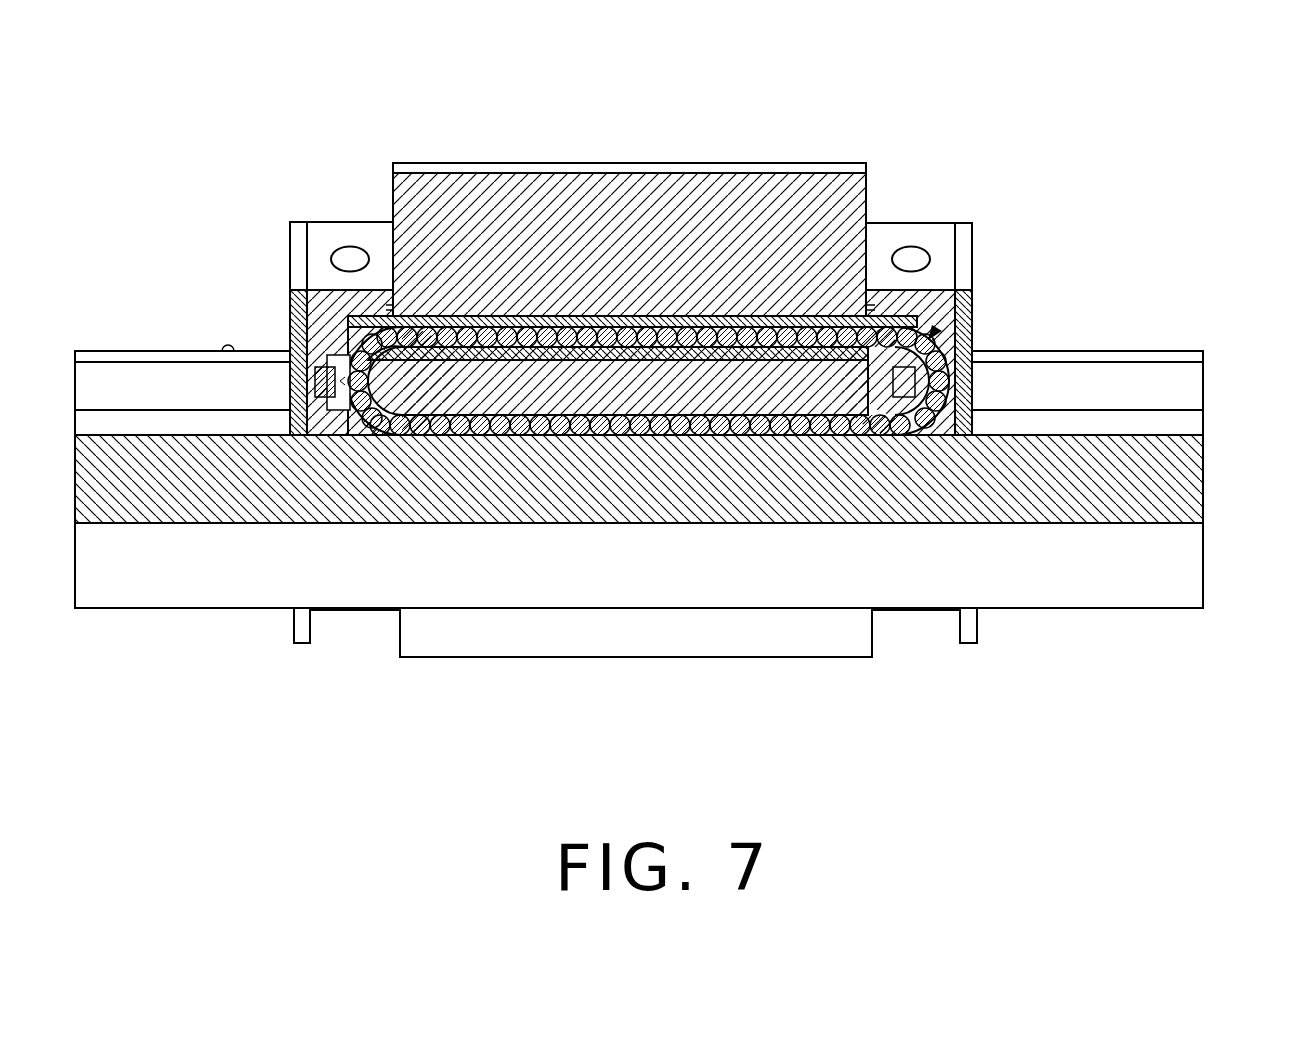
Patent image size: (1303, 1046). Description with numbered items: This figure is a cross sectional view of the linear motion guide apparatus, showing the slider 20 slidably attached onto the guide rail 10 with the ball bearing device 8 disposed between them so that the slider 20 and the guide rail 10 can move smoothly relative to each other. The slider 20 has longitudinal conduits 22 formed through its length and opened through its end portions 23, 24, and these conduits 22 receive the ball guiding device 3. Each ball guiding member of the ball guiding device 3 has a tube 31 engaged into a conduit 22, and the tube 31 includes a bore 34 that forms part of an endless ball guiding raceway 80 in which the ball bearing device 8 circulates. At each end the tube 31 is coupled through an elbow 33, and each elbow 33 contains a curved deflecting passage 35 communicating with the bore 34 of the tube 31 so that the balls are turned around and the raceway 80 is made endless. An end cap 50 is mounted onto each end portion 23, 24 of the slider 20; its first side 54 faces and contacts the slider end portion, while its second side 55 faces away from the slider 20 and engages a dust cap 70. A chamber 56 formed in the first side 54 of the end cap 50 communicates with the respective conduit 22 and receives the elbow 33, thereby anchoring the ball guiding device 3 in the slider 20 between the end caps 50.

The guide rail 10 is at (1178, 373).
The slider 20 is at (658, 203).
The longitudinal conduits 22 is at (563, 323).
The end portion of slider 23 is at (390, 192).
The end portion of slider 24 is at (867, 180).
The ball guiding device 3 is at (972, 290).
The tube 31 is at (715, 317).
The elbow 33 is at (343, 332).
The bore 34 is at (807, 333).
The deflecting passage 35 is at (948, 382).
The end cap 50 is at (332, 228).
The first side of end cap 54 is at (405, 242).
The second side of end cap 55 is at (291, 307).
The chamber 56 is at (367, 440).
The dust cap 70 is at (972, 228).
The ball bearing device 8 is at (763, 332).
The endless ball guiding raceway 80 is at (898, 320).